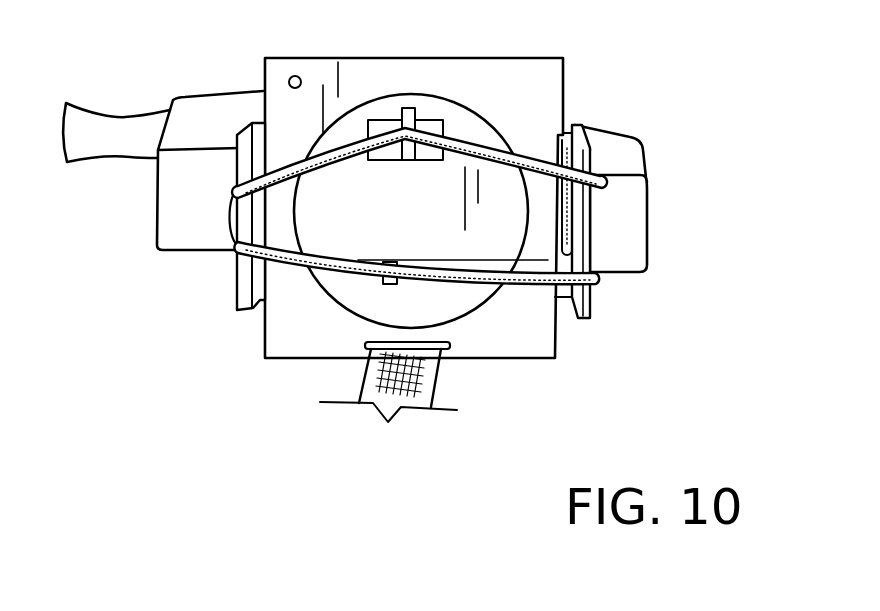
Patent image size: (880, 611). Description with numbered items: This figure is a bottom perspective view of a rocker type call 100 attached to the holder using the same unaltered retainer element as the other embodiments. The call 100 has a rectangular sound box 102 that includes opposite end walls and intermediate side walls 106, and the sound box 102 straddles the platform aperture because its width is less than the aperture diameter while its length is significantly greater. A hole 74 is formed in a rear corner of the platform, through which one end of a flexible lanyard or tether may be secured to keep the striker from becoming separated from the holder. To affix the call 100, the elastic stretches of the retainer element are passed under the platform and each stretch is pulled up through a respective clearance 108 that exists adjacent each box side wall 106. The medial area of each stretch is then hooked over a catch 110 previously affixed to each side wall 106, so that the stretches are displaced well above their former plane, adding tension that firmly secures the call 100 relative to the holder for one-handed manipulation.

The rocker type call 100 is at (423, 215).
The rectangular sound box 102 is at (207, 216).
The side walls 106 is at (211, 118).
The hole 74 is at (303, 78).
The clearance 108 is at (440, 113).
The catch 110 is at (421, 75).